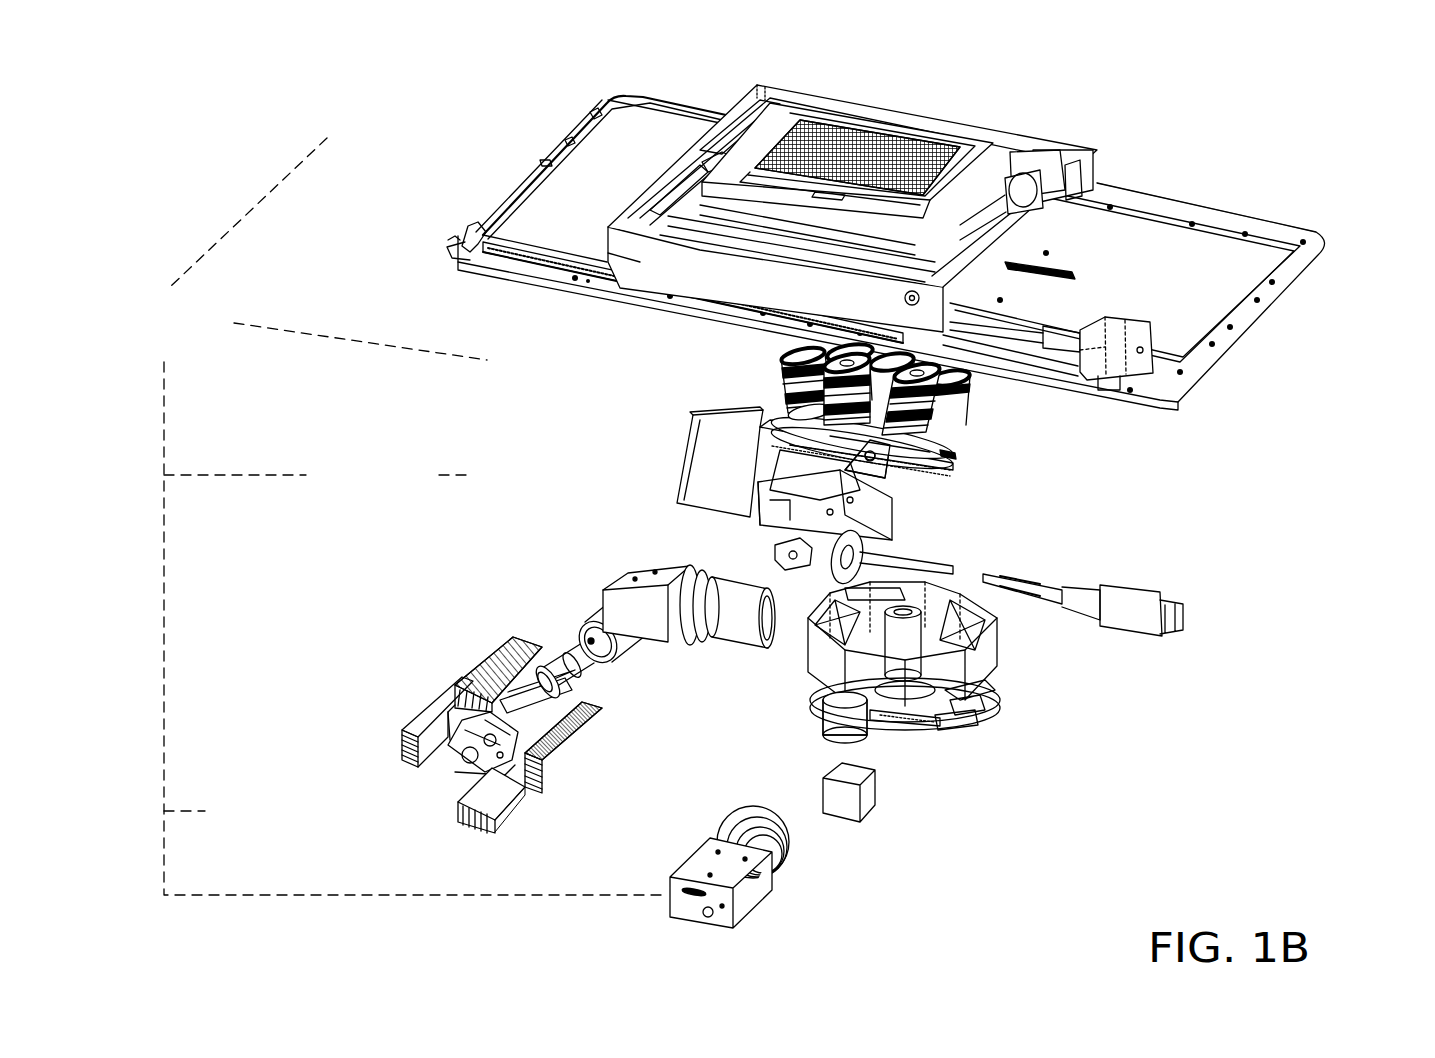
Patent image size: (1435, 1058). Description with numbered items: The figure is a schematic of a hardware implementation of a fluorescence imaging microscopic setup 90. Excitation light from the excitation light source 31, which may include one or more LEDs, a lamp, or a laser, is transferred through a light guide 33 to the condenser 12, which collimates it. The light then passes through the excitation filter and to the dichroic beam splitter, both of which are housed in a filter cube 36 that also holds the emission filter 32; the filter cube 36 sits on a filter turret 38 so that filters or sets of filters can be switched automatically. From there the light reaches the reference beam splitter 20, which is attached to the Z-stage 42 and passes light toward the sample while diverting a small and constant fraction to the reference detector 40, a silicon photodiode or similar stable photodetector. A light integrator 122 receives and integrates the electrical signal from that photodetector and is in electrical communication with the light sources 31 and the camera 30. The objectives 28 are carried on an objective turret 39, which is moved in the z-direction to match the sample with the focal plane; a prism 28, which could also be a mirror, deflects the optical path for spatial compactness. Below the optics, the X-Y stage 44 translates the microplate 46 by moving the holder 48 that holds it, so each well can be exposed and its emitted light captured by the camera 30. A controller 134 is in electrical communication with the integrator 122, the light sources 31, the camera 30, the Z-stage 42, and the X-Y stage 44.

The microscopic setup 90 is at (1350, 187).
The holder 48 is at (755, 118).
The microplate 46 is at (957, 147).
The X-Y stage 44 is at (540, 215).
The controller 134 is at (384, 516).
The Z-stage 42 is at (695, 426).
The light integrator 122 is at (389, 475).
The reference detector 40 is at (790, 562).
The microscope objective lens 28 is at (950, 403).
The objective turret 39 is at (955, 455).
The reference beam splitter 20 is at (865, 483).
The condenser lens 12 is at (653, 578).
The light guide 33 is at (568, 657).
The filter cube 36 is at (923, 630).
The emission filter 32 is at (823, 727).
The filter turret 38 is at (923, 722).
The excitation light source 31 is at (458, 802).
The camera 30 is at (755, 892).